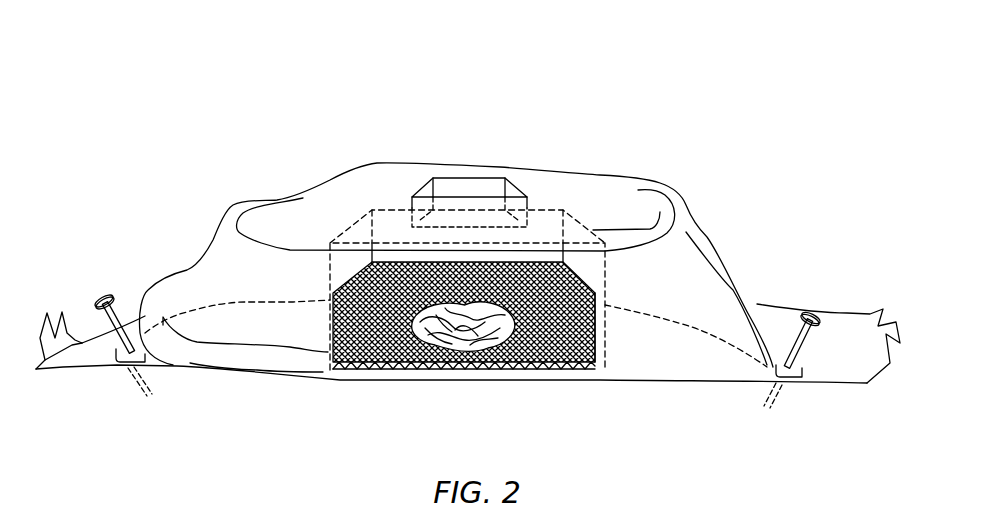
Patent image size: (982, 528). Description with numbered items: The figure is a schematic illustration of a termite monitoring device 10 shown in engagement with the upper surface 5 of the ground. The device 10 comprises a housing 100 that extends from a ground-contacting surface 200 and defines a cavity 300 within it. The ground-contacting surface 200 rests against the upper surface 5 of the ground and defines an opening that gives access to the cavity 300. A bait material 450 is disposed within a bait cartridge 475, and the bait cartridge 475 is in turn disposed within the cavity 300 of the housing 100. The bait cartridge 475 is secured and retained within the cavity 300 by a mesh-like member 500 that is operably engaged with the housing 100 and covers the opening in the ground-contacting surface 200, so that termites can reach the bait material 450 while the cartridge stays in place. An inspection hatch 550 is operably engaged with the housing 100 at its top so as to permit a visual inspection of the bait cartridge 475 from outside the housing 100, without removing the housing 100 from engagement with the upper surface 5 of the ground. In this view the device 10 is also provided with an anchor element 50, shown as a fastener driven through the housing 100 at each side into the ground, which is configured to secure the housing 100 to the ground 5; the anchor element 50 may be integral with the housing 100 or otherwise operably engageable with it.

The upper surface of the ground 5 is at (843, 337).
The termite monitoring device 10 is at (633, 155).
The anchor element 50 is at (108, 325).
The housing 100 is at (668, 280).
The ground-contacting surface 200 is at (243, 321).
The cavity 300 is at (384, 229).
The bait material 450 is at (475, 333).
The bait cartridge 475 is at (600, 348).
The mesh-like member 500 is at (446, 381).
The inspection hatch 550 is at (468, 186).